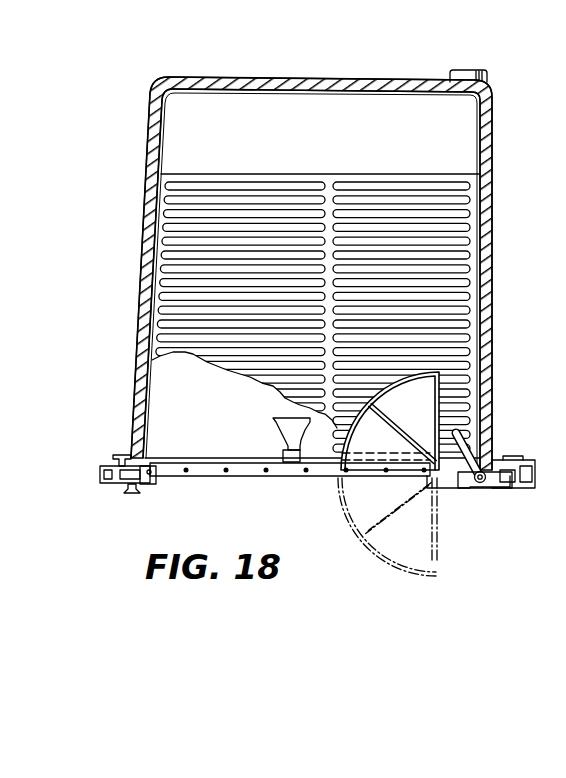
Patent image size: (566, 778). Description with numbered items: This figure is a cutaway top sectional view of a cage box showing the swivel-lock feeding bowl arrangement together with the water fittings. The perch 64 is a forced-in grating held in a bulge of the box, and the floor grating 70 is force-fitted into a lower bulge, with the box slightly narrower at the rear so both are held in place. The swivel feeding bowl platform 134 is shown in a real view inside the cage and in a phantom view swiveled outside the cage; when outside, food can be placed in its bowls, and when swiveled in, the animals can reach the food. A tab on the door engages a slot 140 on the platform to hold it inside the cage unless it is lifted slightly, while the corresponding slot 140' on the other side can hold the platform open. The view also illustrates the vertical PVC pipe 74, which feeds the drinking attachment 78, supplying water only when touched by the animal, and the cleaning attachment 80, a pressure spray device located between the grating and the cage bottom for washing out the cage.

The perch 64 is at (315, 118).
The floor grating 70 is at (165, 246).
The cleaning device 80 is at (275, 422).
The swivel feeding bowl platform 134 is at (408, 433).
The slot 140' is at (442, 418).
The drinking water outlet 78 is at (459, 434).
The vertical PVC pipe 74 is at (486, 488).
The slot 140 is at (422, 527).